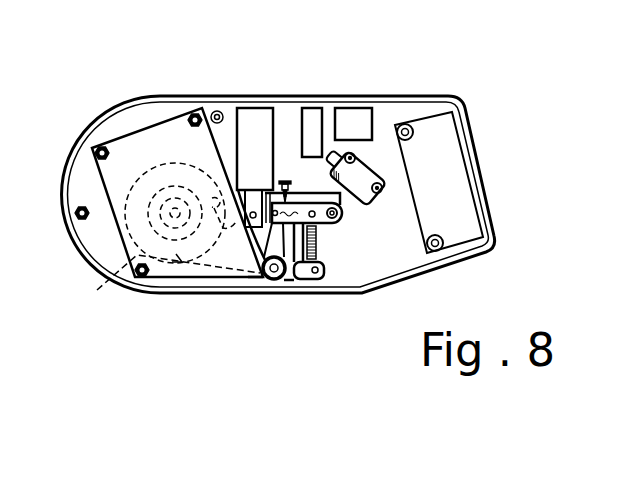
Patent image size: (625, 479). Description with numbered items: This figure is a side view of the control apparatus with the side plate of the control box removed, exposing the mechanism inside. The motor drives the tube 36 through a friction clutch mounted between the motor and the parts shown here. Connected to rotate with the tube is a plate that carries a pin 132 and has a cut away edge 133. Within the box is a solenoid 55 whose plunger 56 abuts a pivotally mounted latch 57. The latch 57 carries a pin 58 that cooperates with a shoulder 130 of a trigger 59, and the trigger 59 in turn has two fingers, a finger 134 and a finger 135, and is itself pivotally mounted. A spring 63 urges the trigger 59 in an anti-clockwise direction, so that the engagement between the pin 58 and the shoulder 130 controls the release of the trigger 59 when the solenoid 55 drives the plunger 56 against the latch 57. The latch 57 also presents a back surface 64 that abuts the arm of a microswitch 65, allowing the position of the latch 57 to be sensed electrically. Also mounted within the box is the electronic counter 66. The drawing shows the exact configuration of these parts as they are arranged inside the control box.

The tube 36 is at (150, 188).
The pin 132 is at (212, 203).
The solenoid 55 is at (229, 108).
The plunger 56 is at (243, 228).
The back surface 64 is at (289, 192).
The microswitch 65 is at (334, 170).
The electronic counter 66 is at (440, 150).
The spring 63 is at (322, 234).
The latch 57 is at (300, 232).
The pin 58 is at (243, 232).
The trigger 59 is at (288, 226).
The shoulder 130 is at (258, 283).
The cut away edge 133 is at (130, 266).
The finger 134 is at (178, 266).
The finger 135 is at (208, 265).